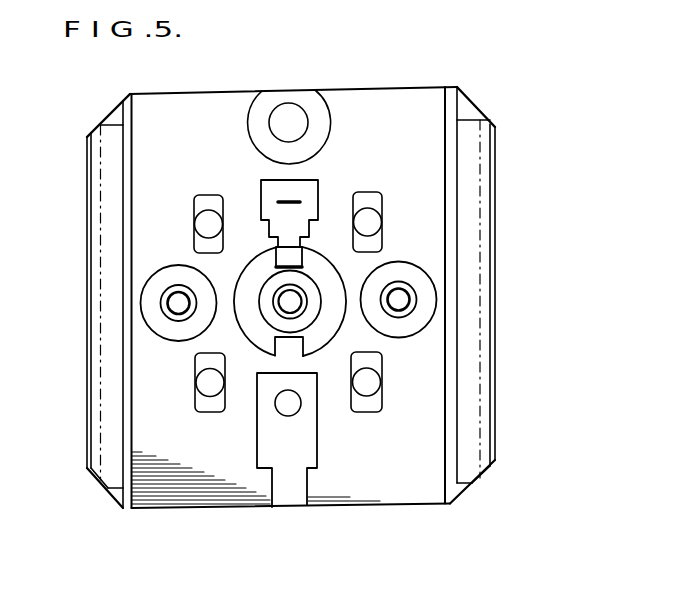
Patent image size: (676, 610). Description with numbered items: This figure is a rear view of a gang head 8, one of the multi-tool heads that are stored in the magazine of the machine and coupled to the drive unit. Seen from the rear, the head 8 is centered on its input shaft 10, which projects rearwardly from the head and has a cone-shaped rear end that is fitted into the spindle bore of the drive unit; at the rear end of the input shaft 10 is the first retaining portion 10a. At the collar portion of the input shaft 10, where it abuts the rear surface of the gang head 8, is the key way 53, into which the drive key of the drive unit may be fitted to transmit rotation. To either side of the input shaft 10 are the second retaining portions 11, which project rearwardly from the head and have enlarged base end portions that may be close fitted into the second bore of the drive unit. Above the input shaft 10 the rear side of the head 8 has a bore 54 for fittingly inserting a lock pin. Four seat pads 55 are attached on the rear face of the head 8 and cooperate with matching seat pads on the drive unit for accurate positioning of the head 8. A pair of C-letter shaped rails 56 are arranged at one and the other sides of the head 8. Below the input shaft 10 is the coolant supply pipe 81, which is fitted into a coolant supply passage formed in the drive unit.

The gang head 8 is at (506, 388).
The C-letter shaped rails 56 is at (485, 219).
The bore 54 is at (295, 119).
The seat pads 55 is at (206, 217).
The input shaft 10 is at (270, 317).
The first retaining portion 10a is at (297, 300).
The key way 53 is at (293, 347).
The second retaining portions 11 is at (167, 302).
The coolant supply pipe 81 is at (277, 412).